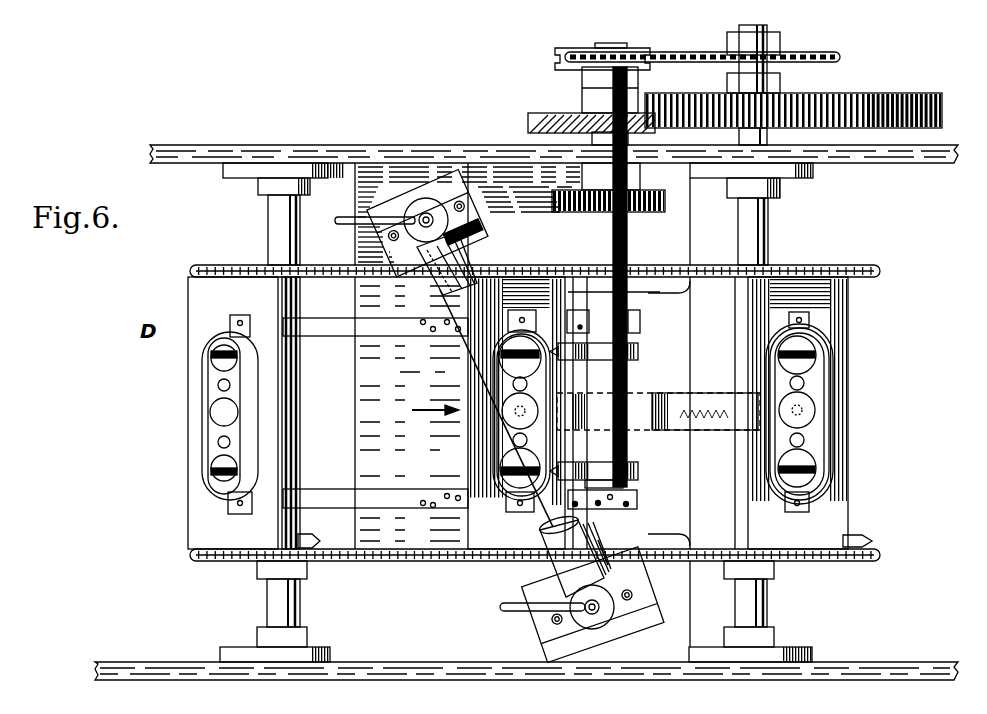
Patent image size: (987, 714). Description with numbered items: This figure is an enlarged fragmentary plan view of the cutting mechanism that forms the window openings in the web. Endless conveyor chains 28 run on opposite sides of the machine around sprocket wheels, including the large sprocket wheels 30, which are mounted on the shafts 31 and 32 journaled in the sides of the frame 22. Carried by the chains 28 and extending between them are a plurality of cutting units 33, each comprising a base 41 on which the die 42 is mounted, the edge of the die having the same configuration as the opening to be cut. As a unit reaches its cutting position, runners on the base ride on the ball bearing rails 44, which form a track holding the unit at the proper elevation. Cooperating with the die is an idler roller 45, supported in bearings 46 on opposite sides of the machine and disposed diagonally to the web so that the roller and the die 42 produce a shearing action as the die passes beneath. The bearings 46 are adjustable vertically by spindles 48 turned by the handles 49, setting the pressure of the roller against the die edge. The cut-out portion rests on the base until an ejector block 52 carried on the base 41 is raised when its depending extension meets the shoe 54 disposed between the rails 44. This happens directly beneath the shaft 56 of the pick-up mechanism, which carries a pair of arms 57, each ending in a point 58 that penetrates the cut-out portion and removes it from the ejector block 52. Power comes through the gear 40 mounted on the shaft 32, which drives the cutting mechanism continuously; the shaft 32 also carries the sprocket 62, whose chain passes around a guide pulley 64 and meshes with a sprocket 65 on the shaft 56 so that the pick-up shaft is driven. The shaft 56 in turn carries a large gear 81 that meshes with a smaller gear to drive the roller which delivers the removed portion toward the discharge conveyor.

The frame 22 is at (425, 145).
The endless conveyor chains 28 is at (709, 278).
The large sprocket wheels 30 is at (846, 265).
The shaft 31 is at (268, 225).
The shaft 32 is at (768, 221).
The cutting units 33 is at (202, 440).
The gear 40 is at (850, 93).
The base 41 is at (188, 515).
The die 42 is at (829, 398).
The ball bearing rails 44 is at (368, 336).
The idler roller 45 is at (553, 573).
The bearings 46 is at (632, 601).
The spindles 48 is at (600, 620).
The handles 49 is at (345, 217).
The ejector block 52 is at (808, 345).
The shoe 54 is at (648, 432).
The shaft 56 is at (598, 246).
The arms 57 is at (600, 355).
The point 58 is at (578, 331).
The sprocket 62 is at (828, 55).
The guide pulley 64 is at (661, 51).
The sprocket 65 is at (577, 48).
The large gear 81 is at (653, 212).